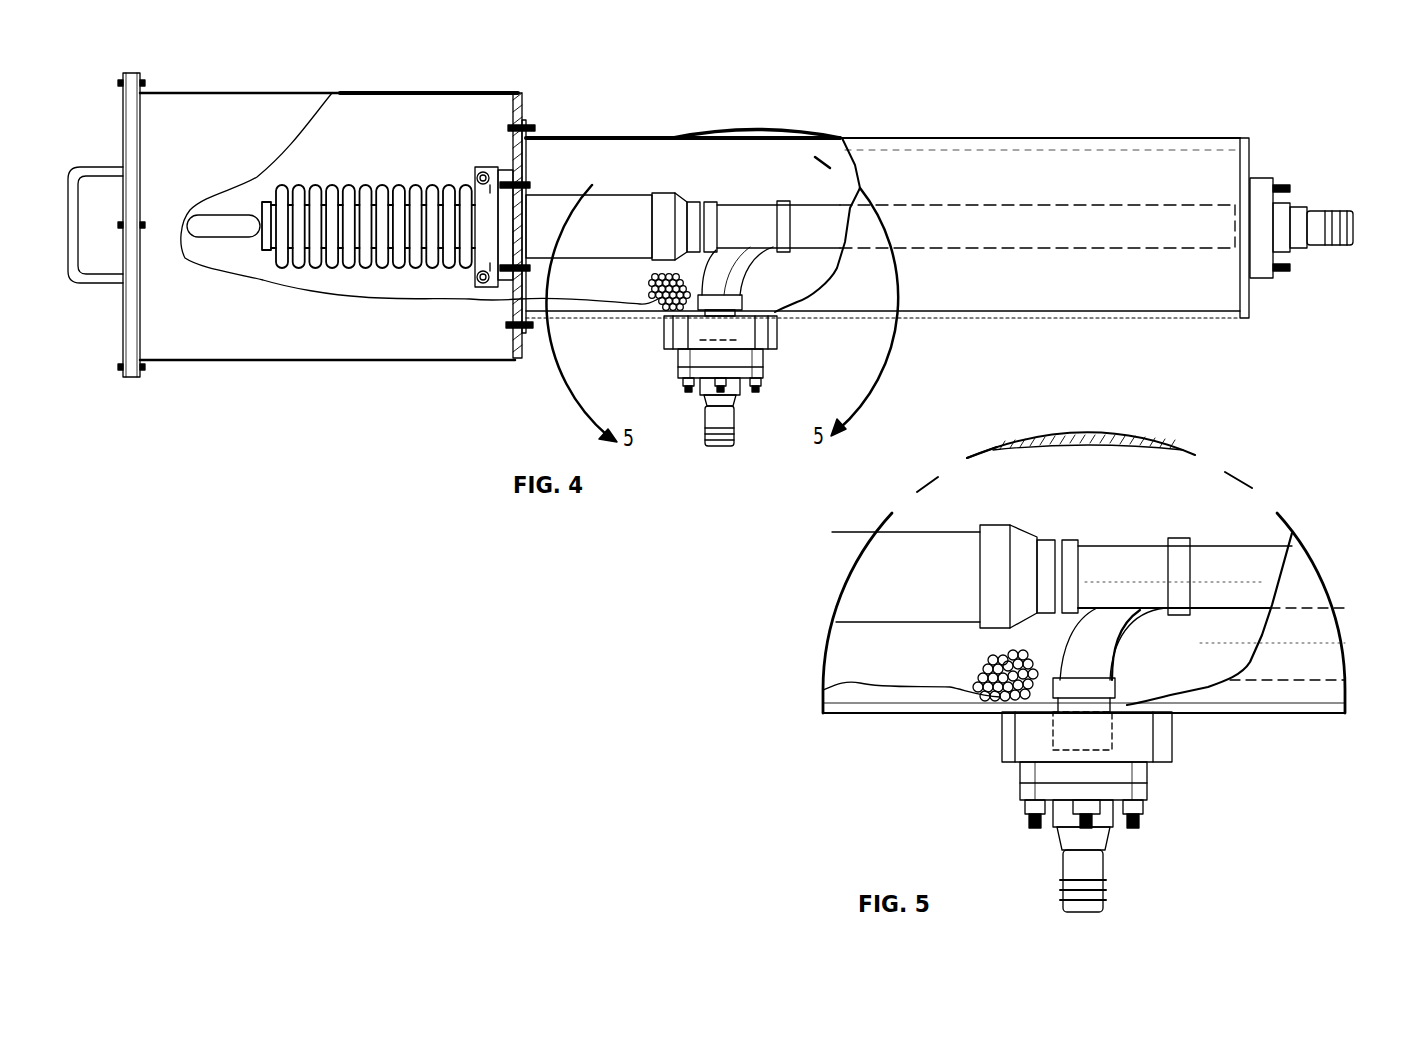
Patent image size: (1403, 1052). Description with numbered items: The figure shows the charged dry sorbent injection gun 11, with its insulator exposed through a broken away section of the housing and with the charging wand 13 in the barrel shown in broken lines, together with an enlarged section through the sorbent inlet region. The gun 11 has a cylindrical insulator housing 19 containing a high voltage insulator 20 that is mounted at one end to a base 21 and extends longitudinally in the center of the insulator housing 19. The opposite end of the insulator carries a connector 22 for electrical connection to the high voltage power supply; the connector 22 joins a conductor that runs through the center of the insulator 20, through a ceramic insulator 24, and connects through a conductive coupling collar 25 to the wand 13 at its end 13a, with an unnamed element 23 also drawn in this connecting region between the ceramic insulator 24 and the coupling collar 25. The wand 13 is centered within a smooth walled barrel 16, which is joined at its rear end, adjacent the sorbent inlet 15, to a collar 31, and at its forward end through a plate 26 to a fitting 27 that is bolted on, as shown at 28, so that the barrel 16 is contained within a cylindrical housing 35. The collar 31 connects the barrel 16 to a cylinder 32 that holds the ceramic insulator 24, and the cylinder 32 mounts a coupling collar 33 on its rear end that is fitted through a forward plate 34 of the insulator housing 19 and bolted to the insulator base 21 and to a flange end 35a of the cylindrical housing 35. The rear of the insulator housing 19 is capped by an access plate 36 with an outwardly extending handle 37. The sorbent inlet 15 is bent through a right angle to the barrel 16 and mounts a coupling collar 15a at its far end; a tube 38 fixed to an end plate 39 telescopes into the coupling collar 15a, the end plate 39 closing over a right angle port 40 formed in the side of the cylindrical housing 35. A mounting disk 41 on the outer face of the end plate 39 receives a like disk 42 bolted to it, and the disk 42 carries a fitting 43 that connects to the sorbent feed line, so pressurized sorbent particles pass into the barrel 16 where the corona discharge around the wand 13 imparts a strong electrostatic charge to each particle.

In FIG. 4, the sorbent injection gun 11 is at (587, 120).
In FIG. 4, the wand 13 is at (1027, 223).
In FIG. 5, the wand 13 is at (1247, 580).
In FIG. 4, the end of wand 13a is at (745, 210).
In FIG. 5, the end of wand 13a is at (1058, 557).
In FIG. 4, the sorbent inlet 15 is at (668, 300).
In FIG. 5, the sorbent inlet 15 is at (1070, 657).
In FIG. 4, the coupling collar 15a is at (783, 320).
In FIG. 5, the coupling collar 15a is at (1060, 695).
In FIG. 4, the smooth walled barrel 16 is at (1147, 207).
In FIG. 5, the smooth walled barrel 16 is at (1225, 545).
In FIG. 4, the insulator housing 19 is at (360, 93).
In FIG. 4, the high voltage insulator 20 is at (355, 268).
In FIG. 4, the base 21 is at (478, 233).
In FIG. 4, the connector 22 is at (222, 237).
In FIG. 4, the ring 23 is at (672, 217).
In FIG. 5, the ring 23 is at (1003, 558).
In FIG. 4, the ceramic insulator 24 is at (642, 190).
In FIG. 5, the ceramic insulator 24 is at (933, 558).
In FIG. 4, the conductive coupling collar 25 is at (690, 227).
In FIG. 5, the conductive coupling collar 25 is at (1040, 557).
In FIG. 4, the plate 26 is at (1249, 303).
In FIG. 4, the fitting 27 is at (1303, 207).
In FIG. 4, the bolts 28 is at (1280, 178).
In FIG. 4, the collar 31 is at (677, 260).
In FIG. 5, the collar 31 is at (990, 617).
In FIG. 4, the cylinder 32 is at (557, 193).
In FIG. 5, the cylinder 32 is at (920, 532).
In FIG. 4, the coupling collar 33 is at (510, 177).
In FIG. 4, the forward plate 34 is at (522, 107).
In FIG. 4, the cylindrical housing 35 is at (1003, 138).
In FIG. 5, the cylindrical housing 35 is at (1068, 435).
In FIG. 4, the flange end 35a is at (533, 322).
In FIG. 4, the access plate 36 is at (123, 128).
In FIG. 4, the handle 37 is at (92, 283).
In FIG. 4, the tube 38 is at (773, 348).
In FIG. 5, the tube 38 is at (1107, 732).
In FIG. 4, the end plate 39 is at (687, 353).
In FIG. 5, the end plate 39 is at (1040, 775).
In FIG. 4, the right angle port 40 is at (777, 338).
In FIG. 5, the right angle port 40 is at (1168, 735).
In FIG. 4, the mounting disk 41 is at (690, 388).
In FIG. 5, the mounting disk 41 is at (1020, 780).
In FIG. 4, the disk 42 is at (765, 378).
In FIG. 5, the disk 42 is at (1150, 787).
In FIG. 4, the fitting 43 is at (727, 445).
In FIG. 5, the fitting 43 is at (1073, 863).